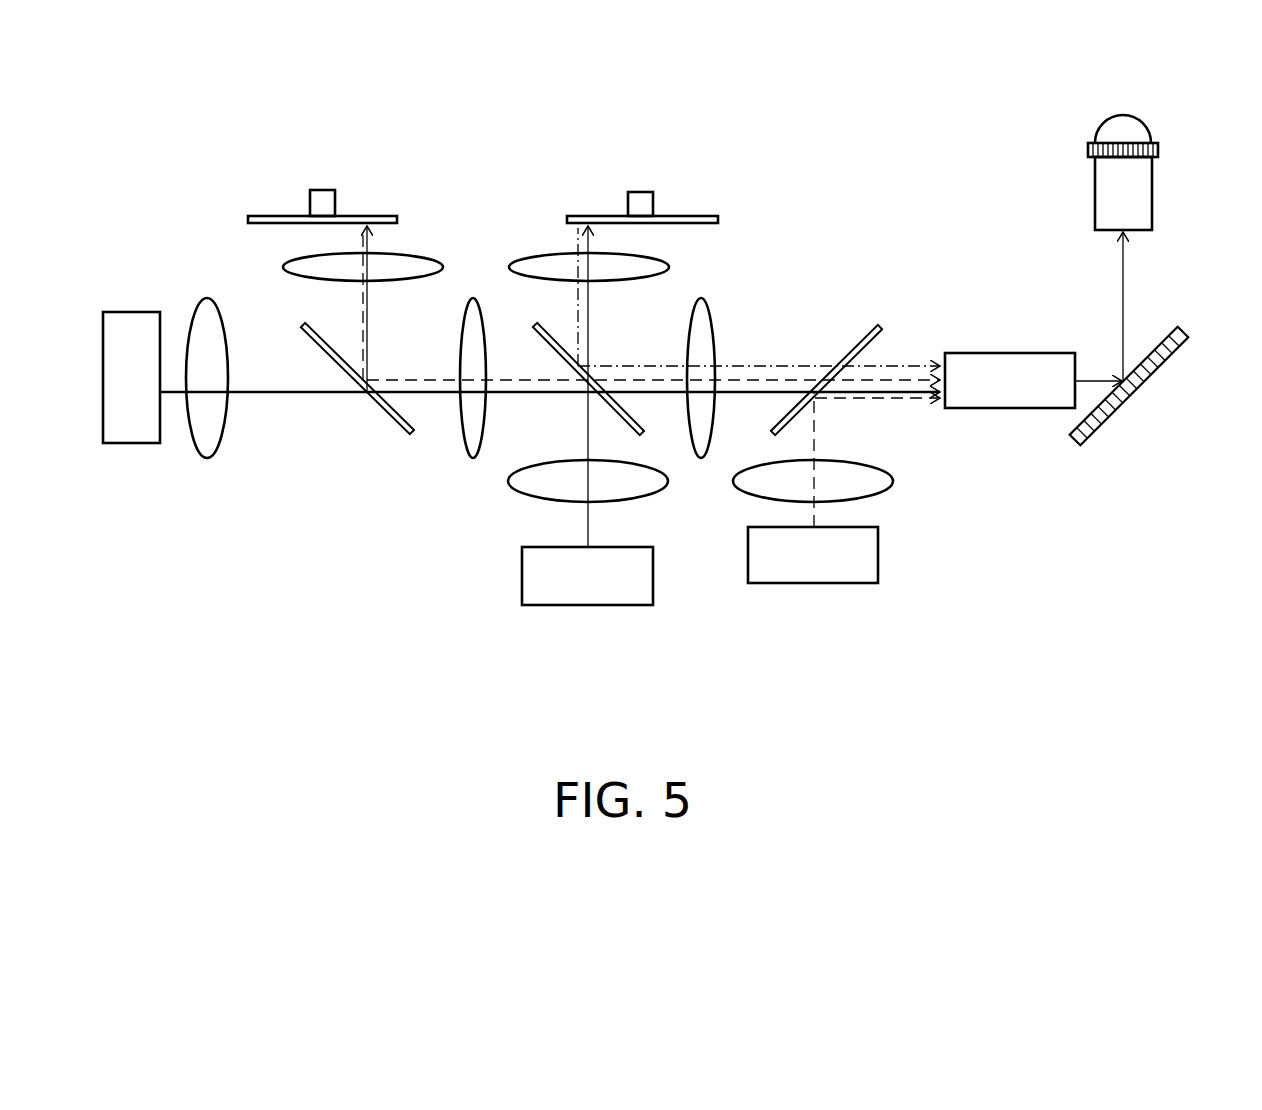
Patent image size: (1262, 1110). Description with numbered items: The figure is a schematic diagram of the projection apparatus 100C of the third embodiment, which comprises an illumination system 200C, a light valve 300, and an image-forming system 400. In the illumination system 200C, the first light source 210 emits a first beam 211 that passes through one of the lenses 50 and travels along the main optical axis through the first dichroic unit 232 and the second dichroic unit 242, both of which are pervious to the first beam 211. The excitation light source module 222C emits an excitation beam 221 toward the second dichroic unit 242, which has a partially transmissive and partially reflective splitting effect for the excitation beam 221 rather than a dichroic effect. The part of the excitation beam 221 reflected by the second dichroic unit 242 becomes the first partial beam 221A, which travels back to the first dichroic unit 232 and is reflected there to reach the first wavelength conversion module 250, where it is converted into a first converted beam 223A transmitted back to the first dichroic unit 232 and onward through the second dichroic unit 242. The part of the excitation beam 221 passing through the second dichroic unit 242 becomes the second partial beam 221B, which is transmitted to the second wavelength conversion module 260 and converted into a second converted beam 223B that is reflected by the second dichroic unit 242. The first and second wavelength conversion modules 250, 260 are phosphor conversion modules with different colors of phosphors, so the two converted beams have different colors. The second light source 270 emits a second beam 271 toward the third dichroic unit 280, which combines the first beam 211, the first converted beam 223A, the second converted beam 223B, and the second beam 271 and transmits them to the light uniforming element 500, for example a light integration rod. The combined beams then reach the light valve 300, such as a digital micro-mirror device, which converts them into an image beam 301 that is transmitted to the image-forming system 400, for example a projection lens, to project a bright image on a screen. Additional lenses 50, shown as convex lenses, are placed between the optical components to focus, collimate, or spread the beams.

The projection apparatus 100C is at (1258, 738).
The illumination system 200C is at (870, 247).
The first light source 210 is at (138, 327).
The lenses 50 is at (207, 312).
The first beam 211 is at (268, 390).
The first dichroic unit 232 is at (320, 350).
The first converted beam 223A is at (357, 243).
The first partial beam 221A is at (368, 243).
The first wavelength conversion module 250 is at (320, 205).
The second dichroic unit 242 is at (552, 350).
The second converted beam 223B is at (576, 237).
The second partial beam 221B is at (590, 243).
The second wavelength conversion module 260 is at (648, 207).
The excitation beam 221 is at (588, 528).
The excitation light source module 222C is at (640, 575).
The third dichroic unit 280 is at (860, 345).
The second beam 271 is at (815, 440).
The second light source 270 is at (867, 553).
The light uniforming element 500 is at (1030, 367).
The light valve 300 is at (1135, 390).
The image beam 301 is at (1127, 282).
The image-forming system 400 is at (1142, 215).